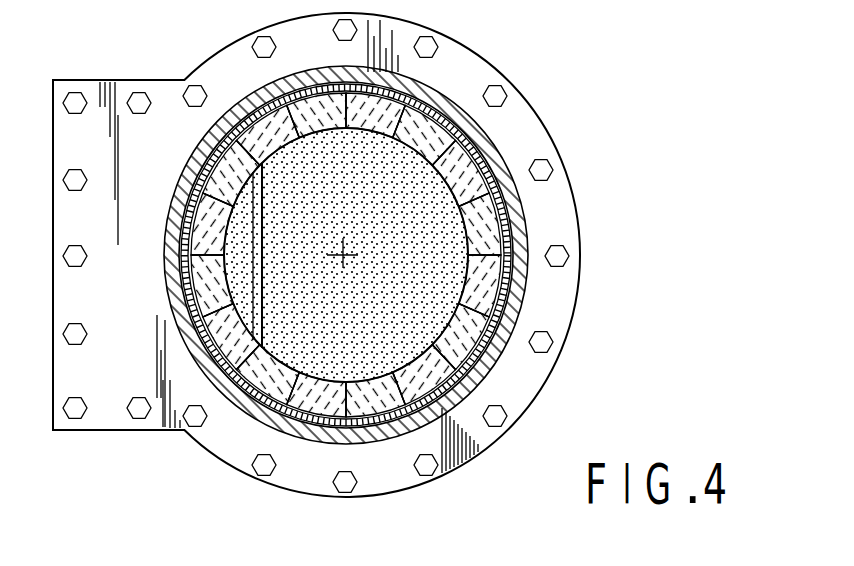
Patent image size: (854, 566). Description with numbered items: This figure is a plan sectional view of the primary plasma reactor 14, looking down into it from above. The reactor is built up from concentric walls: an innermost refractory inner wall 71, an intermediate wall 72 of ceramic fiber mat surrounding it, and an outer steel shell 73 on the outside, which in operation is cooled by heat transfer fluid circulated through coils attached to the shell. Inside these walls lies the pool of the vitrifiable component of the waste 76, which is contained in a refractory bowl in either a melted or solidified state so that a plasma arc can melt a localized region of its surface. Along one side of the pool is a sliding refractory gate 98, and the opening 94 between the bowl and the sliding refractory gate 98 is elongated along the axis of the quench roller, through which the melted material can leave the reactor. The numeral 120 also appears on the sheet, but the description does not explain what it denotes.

The flange housing 14 is at (540, 106).
The outer hatched ring 73 is at (527, 218).
The thin intermediate ring 72 is at (512, 242).
The segmented block ring 71 is at (485, 285).
The block joint 98 is at (215, 212).
The core material 76 is at (357, 358).
The flat insert 94 is at (252, 273).
The reference numeral 120 is at (709, 557).